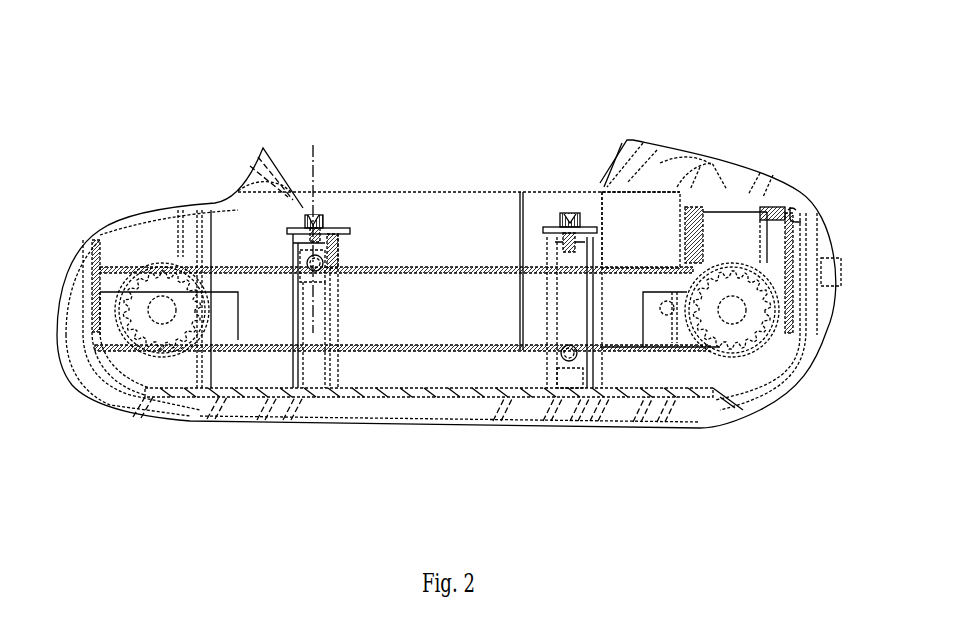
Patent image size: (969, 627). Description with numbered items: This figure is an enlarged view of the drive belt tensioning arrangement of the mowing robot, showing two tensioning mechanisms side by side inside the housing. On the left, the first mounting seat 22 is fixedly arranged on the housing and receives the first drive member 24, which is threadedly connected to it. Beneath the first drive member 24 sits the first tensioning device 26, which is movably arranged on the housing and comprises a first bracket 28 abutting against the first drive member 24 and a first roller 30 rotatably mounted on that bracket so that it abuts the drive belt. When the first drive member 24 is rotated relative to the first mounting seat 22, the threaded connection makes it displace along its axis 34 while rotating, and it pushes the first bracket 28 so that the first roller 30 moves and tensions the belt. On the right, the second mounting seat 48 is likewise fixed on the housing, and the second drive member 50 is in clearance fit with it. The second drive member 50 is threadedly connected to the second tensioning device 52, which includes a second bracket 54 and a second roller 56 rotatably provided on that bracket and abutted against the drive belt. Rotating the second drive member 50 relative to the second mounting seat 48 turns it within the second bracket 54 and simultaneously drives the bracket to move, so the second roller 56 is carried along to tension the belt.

The first mounting seat 22 is at (240, 185).
The first drive member 24 is at (305, 215).
The first tensioning device 26 is at (367, 206).
The first bracket 28 is at (330, 250).
The first roller 30 is at (342, 232).
The axis 34 is at (313, 173).
The second mounting seat 48 is at (588, 228).
The second drive member 50 is at (568, 210).
The second tensioning device 52 is at (625, 317).
The second bracket 54 is at (577, 297).
The second roller 56 is at (572, 362).